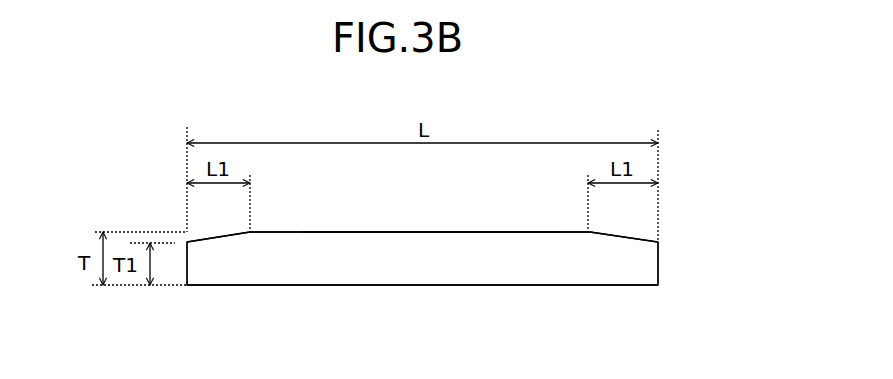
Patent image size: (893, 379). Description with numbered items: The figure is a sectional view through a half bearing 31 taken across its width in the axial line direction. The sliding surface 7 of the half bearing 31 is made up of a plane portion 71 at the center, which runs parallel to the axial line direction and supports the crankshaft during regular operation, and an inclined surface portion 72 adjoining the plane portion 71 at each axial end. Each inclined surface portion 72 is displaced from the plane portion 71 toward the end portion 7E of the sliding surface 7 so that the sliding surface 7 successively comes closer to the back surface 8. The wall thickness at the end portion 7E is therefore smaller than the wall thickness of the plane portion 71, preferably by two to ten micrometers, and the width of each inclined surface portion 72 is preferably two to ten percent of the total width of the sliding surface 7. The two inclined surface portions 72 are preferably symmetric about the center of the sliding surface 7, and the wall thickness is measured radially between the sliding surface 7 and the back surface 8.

The half bearing 31 is at (512, 117).
The sliding surface 7 is at (338, 232).
The plane portion 71 is at (490, 232).
The inclined surface portion 72 is at (203, 240).
The end portion of the sliding surface 7E is at (187, 236).
The back surface 8 is at (292, 286).